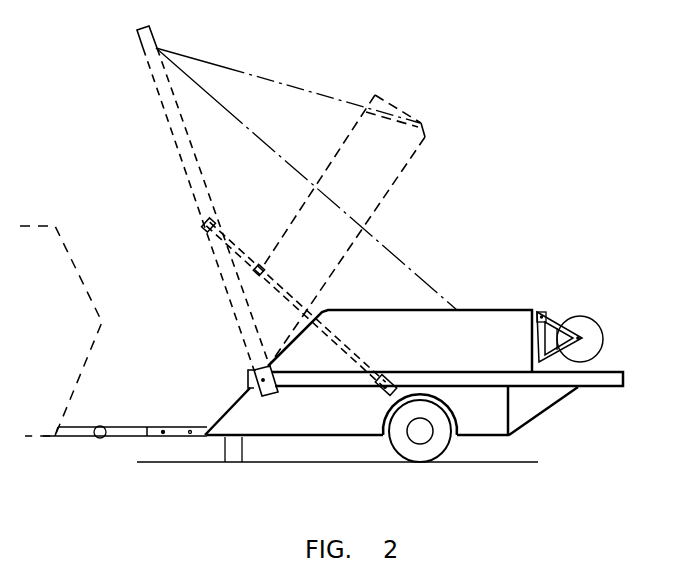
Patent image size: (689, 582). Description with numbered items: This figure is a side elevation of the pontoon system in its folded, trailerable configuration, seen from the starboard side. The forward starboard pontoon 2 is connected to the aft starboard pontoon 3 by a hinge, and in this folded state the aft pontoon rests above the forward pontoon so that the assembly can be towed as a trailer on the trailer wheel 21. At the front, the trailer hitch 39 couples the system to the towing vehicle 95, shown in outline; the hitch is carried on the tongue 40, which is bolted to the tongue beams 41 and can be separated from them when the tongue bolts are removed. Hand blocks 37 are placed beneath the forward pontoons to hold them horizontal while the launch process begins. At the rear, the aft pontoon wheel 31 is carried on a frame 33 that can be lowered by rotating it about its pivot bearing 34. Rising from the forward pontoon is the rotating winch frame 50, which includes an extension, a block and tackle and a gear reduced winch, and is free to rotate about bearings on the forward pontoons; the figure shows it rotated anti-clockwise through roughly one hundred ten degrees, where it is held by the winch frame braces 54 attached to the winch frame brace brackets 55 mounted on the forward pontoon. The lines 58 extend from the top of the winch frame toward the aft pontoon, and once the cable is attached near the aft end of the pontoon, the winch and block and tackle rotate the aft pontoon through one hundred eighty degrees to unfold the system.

The forward starboard pontoon 2 is at (538, 397).
The aft starboard pontoon 3 is at (403, 330).
The trailer wheel 21 is at (432, 445).
The aft pontoon wheel 31 is at (588, 333).
The frame 33 is at (565, 321).
The pivot bearing 34 is at (538, 312).
The hand block 37 is at (237, 453).
The trailer hitch 39 is at (95, 428).
The tongue 40 is at (125, 427).
The tongue beam 41 is at (178, 427).
The rotating winch frame 50 is at (184, 128).
The winch frame brace 54 is at (293, 298).
The winch frame brace bracket 55 is at (383, 386).
The guy lines 58 is at (277, 153).
The vehicle 95 is at (60, 287).